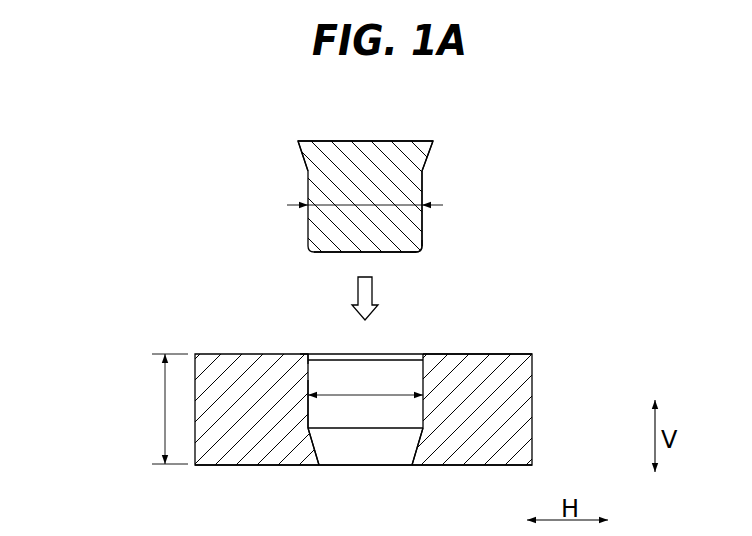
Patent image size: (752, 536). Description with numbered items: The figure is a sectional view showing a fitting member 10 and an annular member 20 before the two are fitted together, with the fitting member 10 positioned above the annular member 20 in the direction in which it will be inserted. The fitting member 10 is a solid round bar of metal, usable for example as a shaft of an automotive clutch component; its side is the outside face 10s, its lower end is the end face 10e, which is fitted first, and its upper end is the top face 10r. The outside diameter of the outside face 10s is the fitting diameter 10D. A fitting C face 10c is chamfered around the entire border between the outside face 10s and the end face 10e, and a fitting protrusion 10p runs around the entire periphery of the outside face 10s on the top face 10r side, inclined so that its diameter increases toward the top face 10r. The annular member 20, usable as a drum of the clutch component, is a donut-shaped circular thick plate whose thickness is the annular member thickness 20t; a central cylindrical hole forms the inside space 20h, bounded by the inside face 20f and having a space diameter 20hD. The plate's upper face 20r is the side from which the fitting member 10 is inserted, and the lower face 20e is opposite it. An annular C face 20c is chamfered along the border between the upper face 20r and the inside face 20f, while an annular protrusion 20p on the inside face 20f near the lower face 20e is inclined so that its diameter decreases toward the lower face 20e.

The fitting member 10 is at (281, 120).
The top face 10r is at (395, 137).
The fitting protrusion 10p is at (300, 150).
The fitting diameter 10D is at (297, 203).
The outside face 10s is at (430, 230).
The fitting C face 10c is at (424, 252).
The end face 10e is at (333, 254).
The annular member 20 is at (203, 338).
The inside space 20h is at (358, 375).
The space diameter 20hD is at (383, 393).
The annular C face 20c is at (310, 352).
The upper face 20r is at (502, 351).
The annular member thickness 20t is at (163, 415).
The lower face 20e is at (247, 470).
The annular protrusion 20p is at (310, 451).
The inside face 20f is at (313, 408).